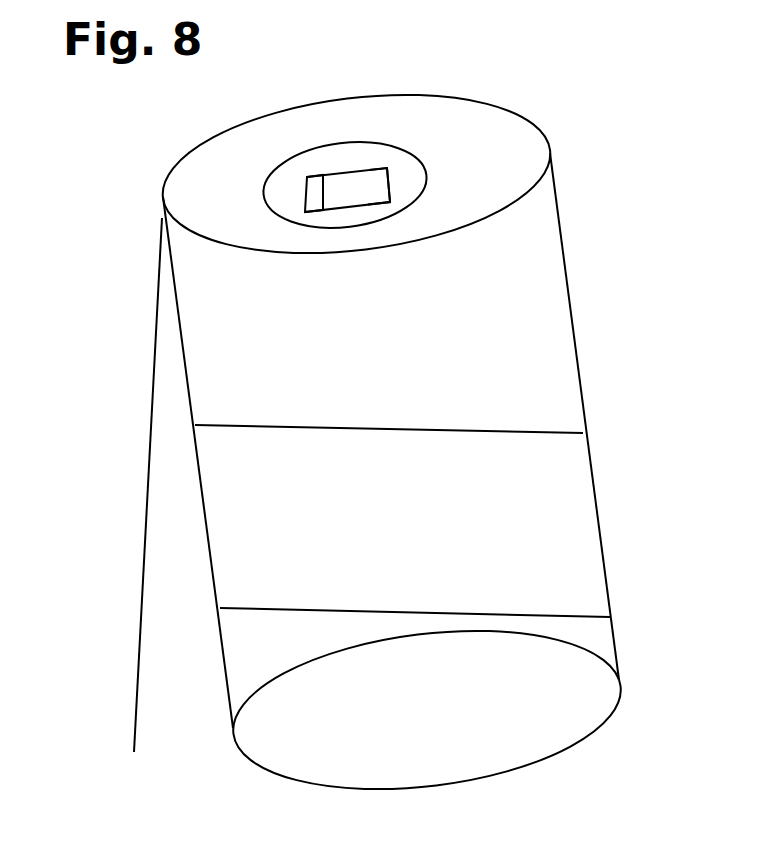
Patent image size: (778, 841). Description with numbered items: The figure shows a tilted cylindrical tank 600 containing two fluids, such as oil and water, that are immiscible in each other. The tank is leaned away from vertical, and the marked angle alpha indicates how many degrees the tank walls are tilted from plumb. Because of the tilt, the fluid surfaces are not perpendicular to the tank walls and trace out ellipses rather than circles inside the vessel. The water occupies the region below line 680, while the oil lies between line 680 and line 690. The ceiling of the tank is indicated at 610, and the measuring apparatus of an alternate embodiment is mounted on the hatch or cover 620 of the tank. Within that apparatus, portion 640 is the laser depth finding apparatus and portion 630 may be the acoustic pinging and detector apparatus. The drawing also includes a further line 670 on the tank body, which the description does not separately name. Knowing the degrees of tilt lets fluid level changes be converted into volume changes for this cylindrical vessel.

The tilted cylindrical tank 600 is at (557, 167).
The ceiling of the tank 610 is at (412, 138).
The hatch or cover 620 is at (348, 158).
The acoustic pinging and detector apparatus 630 is at (377, 180).
The laser depth finding apparatus 640 is at (313, 187).
The upper dividing line on roll 670 is at (415, 442).
The line 680 is at (273, 603).
The line 690 is at (170, 435).